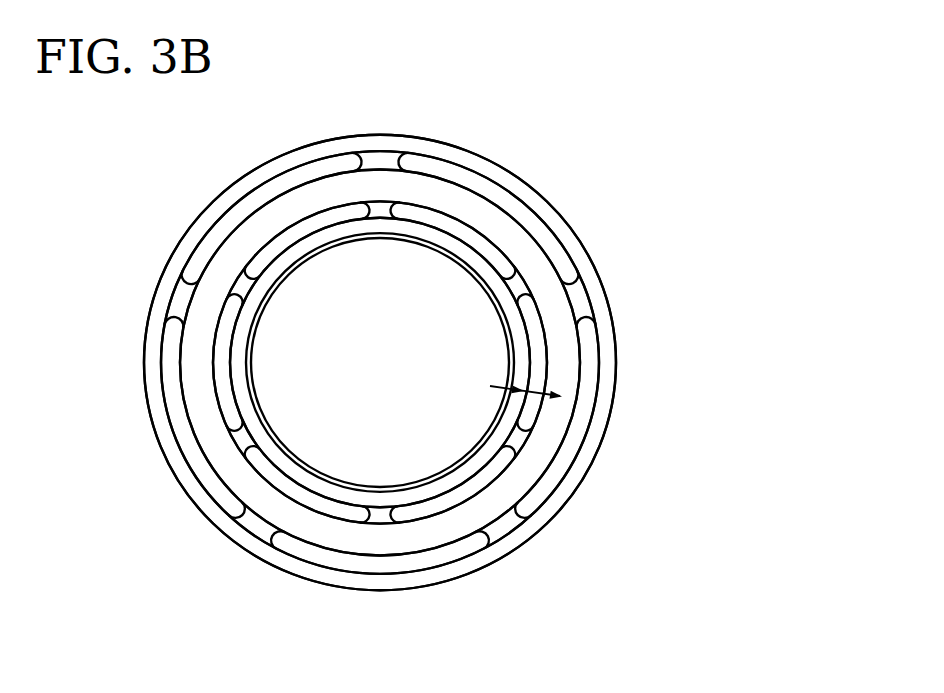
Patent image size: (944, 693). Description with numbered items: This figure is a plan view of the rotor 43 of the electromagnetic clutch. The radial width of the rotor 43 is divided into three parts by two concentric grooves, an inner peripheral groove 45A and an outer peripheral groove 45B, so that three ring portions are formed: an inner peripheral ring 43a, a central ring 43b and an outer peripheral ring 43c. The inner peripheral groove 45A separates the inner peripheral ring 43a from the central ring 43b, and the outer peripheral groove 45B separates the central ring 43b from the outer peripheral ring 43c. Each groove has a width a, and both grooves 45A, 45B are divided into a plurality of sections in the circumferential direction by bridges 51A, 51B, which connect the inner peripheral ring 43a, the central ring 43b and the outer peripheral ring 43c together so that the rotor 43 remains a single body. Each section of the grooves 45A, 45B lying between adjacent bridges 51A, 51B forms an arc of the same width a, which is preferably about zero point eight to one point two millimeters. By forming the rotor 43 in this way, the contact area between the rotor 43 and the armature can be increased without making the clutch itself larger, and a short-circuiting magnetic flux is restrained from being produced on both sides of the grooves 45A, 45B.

The rotor 43 is at (509, 134).
The inner peripheral ring 43a is at (307, 482).
The central ring 43b is at (475, 513).
The outer peripheral ring 43c is at (563, 497).
The inner peripheral groove 45A is at (302, 231).
The outer peripheral groove 45B is at (553, 247).
The bridges 51A is at (382, 212).
The bridges 51B is at (381, 158).
The width a is at (526, 378).